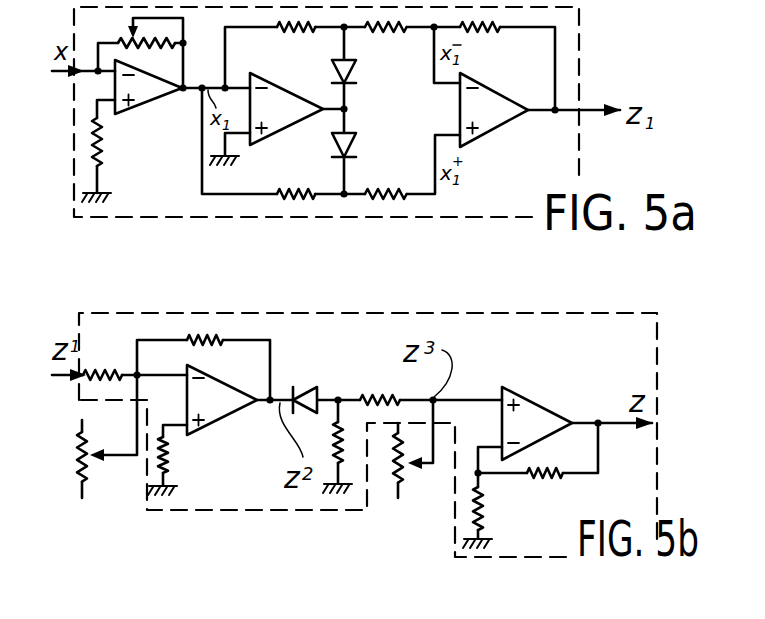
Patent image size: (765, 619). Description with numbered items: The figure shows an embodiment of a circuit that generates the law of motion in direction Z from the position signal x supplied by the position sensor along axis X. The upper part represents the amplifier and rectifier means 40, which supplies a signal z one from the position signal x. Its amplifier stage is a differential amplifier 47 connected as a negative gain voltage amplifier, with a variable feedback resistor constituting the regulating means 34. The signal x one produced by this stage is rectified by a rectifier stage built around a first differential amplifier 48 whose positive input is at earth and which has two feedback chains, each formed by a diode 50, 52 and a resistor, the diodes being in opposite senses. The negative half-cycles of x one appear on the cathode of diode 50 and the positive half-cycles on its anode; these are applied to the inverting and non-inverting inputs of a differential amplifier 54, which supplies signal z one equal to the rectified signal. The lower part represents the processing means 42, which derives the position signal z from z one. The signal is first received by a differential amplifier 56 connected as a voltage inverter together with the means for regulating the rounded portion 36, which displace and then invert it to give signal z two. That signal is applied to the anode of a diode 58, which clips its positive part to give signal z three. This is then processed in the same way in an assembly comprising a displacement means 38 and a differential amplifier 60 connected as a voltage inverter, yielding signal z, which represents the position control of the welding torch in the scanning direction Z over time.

In FIG. 5a, the regulating means 34 is at (110, 27).
In FIG. 5a, the amplifier and rectifier means 40 is at (580, 48).
In FIG. 5a, the differential amplifier 47 is at (155, 88).
In FIG. 5a, the first differential amplifier 48 is at (291, 93).
In FIG. 5a, the diode 50 is at (350, 71).
In FIG. 5a, the diode 52 is at (400, 136).
In FIG. 5a, the differential amplifier 54 is at (503, 110).
In FIG. 5b, the means for regulating the rounded portion 36 is at (95, 474).
In FIG. 5b, the displacement means 38 is at (414, 479).
In FIG. 5b, the processing means 42 is at (701, 322).
In FIG. 5b, the differential amplifier 56 is at (228, 399).
In FIG. 5b, the diode 58 is at (305, 392).
In FIG. 5b, the differential amplifier 60 is at (537, 413).